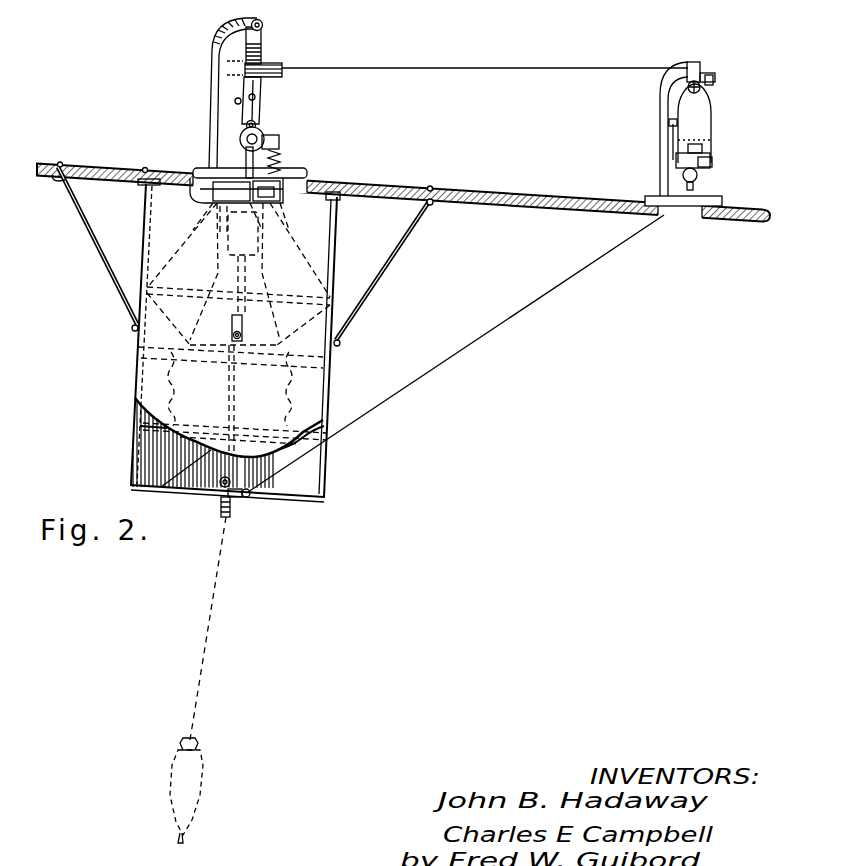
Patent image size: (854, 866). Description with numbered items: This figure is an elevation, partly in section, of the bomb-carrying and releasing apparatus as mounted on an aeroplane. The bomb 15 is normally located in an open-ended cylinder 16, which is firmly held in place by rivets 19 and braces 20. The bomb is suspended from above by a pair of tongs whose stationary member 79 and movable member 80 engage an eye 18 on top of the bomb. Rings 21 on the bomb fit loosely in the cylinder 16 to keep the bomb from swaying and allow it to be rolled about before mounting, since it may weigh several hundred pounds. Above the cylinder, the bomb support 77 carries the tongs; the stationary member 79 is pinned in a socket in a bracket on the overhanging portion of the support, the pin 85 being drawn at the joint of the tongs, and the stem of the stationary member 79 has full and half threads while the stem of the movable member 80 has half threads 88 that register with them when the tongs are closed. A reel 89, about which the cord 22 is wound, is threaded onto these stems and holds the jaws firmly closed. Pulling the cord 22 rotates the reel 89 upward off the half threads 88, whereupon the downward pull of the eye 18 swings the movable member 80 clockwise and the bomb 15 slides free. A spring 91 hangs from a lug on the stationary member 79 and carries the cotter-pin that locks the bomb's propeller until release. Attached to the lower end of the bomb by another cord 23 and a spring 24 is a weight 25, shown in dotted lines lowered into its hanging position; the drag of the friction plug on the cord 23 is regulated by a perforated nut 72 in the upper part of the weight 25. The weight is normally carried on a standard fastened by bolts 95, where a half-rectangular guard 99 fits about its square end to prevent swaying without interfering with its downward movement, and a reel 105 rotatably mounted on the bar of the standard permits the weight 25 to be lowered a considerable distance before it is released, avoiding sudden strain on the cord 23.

The bomb 15 is at (161, 487).
The open-ended cylinder 16 is at (326, 470).
The eye 18 is at (230, 157).
The rivets 19 is at (145, 168).
The braces 20 is at (100, 240).
The rings 21 is at (160, 350).
The cord 22 is at (506, 68).
The cord 23 is at (509, 322).
The spring 24 is at (244, 502).
The weight 25 is at (183, 793).
The perforated nut 72 is at (705, 178).
The bomb support 77 is at (221, 97).
The stationary member 79 is at (267, 50).
The movable member 80 is at (260, 107).
The pin 85 is at (237, 103).
The half threads 88 is at (262, 57).
The reel 89 is at (287, 78).
The spring 91 is at (280, 155).
The bolts 95 is at (718, 196).
The half-rectangular guard 99 is at (700, 165).
The reel 105 is at (725, 50).